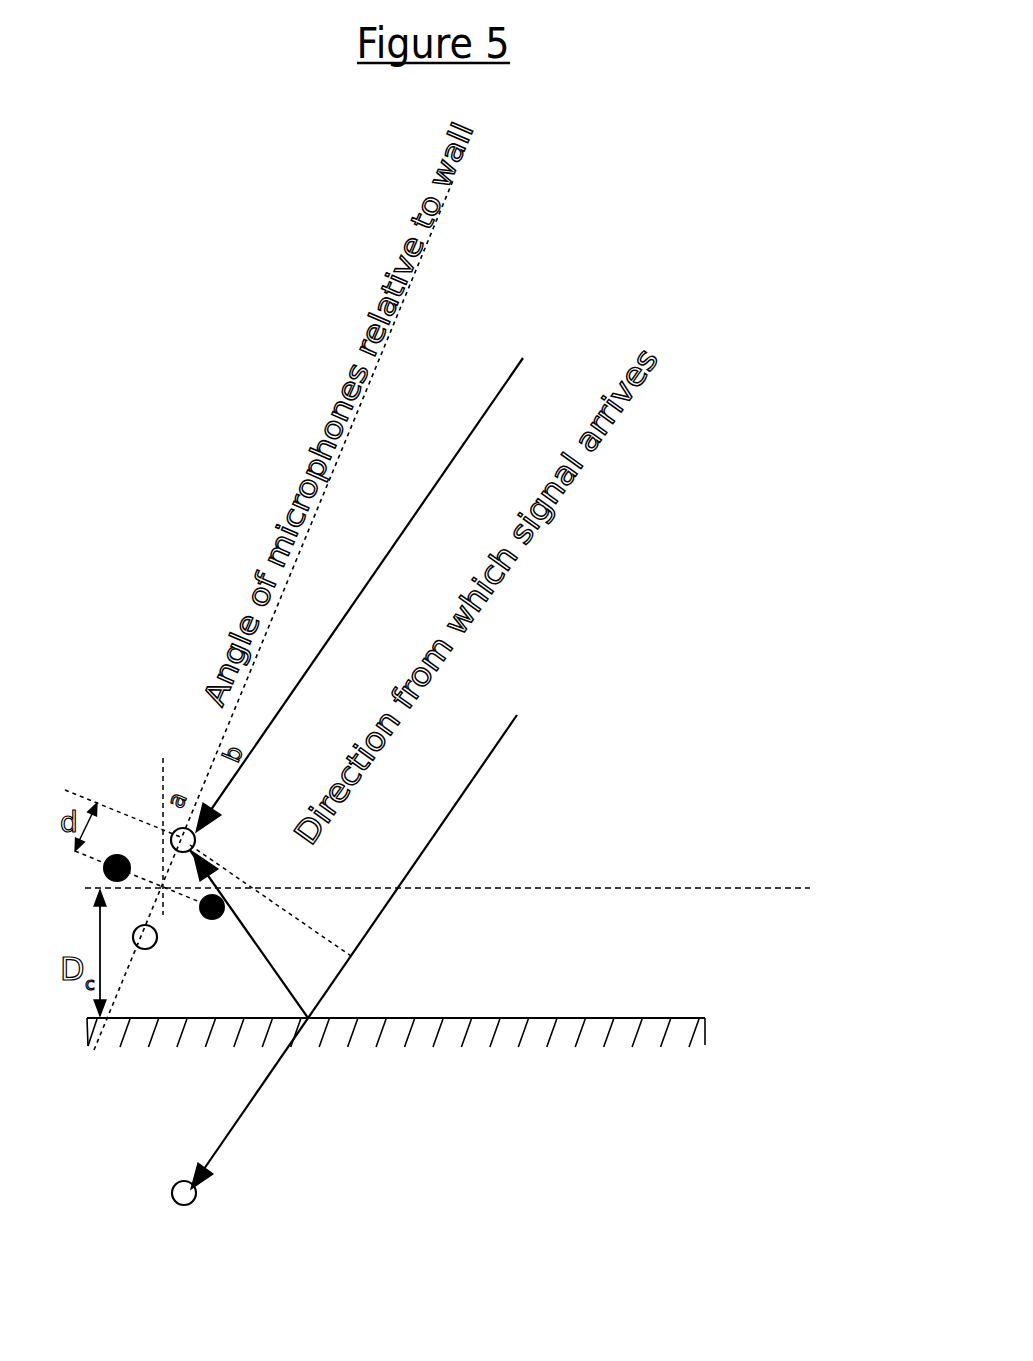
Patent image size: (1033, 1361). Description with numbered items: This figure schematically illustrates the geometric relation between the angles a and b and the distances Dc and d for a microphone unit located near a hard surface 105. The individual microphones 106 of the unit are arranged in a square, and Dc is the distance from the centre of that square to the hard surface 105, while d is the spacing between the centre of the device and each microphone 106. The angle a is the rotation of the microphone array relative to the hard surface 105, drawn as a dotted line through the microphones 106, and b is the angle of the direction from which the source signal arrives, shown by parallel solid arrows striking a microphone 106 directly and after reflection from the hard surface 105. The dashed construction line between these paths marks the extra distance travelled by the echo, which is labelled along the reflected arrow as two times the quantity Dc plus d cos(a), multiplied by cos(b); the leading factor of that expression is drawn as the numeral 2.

The path difference expression 2 is at (309, 1034).
The hard surface 105 is at (622, 1017).
The microphone 106 is at (117, 854).